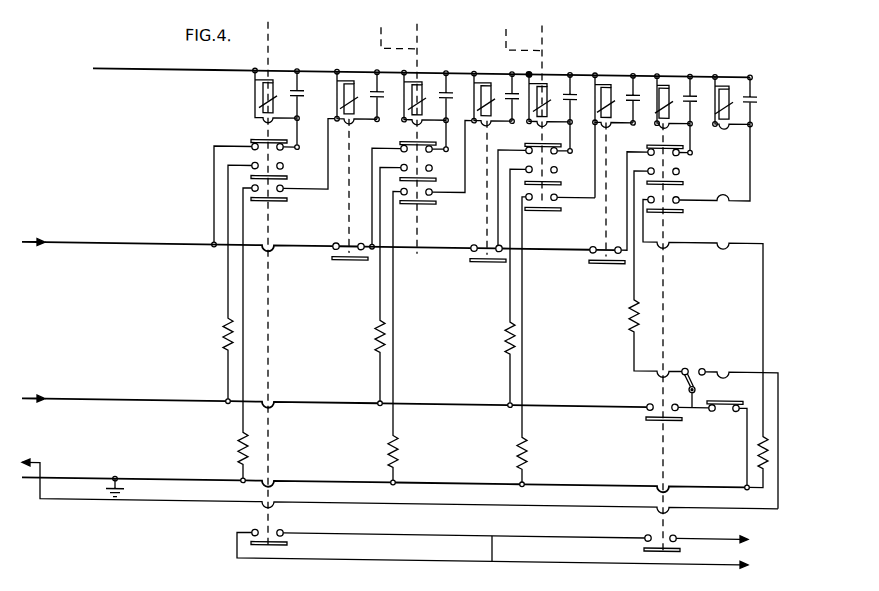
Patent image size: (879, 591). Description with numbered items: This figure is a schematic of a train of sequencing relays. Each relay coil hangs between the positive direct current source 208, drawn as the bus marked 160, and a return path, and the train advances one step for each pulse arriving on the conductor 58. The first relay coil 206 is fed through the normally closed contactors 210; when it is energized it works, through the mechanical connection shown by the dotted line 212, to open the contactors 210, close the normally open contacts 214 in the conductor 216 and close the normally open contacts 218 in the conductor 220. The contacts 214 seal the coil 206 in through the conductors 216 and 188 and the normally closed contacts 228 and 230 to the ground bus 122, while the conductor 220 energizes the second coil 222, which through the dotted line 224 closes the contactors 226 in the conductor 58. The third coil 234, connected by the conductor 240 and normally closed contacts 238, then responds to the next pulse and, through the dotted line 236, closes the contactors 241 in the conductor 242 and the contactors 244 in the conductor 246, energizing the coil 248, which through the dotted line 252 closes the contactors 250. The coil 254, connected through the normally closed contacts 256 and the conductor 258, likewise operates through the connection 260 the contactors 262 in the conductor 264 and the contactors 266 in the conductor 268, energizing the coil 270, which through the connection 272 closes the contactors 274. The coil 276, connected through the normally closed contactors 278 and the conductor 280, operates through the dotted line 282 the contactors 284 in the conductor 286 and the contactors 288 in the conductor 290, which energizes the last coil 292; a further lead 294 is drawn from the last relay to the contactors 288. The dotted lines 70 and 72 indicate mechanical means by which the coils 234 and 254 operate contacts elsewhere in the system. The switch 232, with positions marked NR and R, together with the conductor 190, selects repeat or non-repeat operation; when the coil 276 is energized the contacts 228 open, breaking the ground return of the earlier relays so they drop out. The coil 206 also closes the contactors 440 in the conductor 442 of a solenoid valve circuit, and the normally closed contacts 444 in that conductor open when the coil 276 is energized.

The conductor 58 is at (137, 240).
The dotted line (mechanical means) 70 is at (379, 31).
The dotted line (mechanical actuating means) 72 is at (505, 31).
The ground bus 122 is at (450, 476).
The source of positive voltage 160 is at (153, 58).
The conductor 188 is at (113, 396).
The conductor 190 is at (780, 360).
The coil of first relay 206 is at (258, 97).
The source of direct current positive voltage 208 is at (214, 67).
The normally closed contactors 210 is at (251, 138).
The dotted line (mechanical connection) 212 is at (270, 33).
The normally open contacts 214 is at (283, 164).
The conductor 216 is at (290, 153).
The normally open contacts 218 is at (283, 187).
The conductor 220 is at (243, 282).
The coil of second relay 222 is at (356, 82).
The dotted line (mechanical connection) 224 is at (348, 235).
The normally open contactors 226 is at (332, 253).
The normally closed contacts 228 is at (647, 404).
The normally closed contacts 230 is at (713, 444).
The switch 232 is at (688, 356).
The coil of third relay 234 is at (425, 84).
The dotted line (mechanical connection) 236 is at (419, 33).
The normally closed contacts 238 is at (400, 138).
The conductor 240 is at (372, 225).
The normally open contactors 241 is at (432, 164).
The conductor 242 is at (379, 287).
The normally open contactors 244 is at (432, 188).
The conductor 246 is at (394, 287).
The coil of relay 248 is at (494, 84).
The normally open contactors 250 is at (470, 253).
The dotted line (mechanical means) 252 is at (486, 224).
The coil of relay 254 is at (550, 84).
The normally closed contacts 256 is at (525, 136).
The conductor 258 is at (498, 223).
The mechanical connection 260 is at (544, 33).
The normally open contactors 262 is at (557, 165).
The conductor 264 is at (509, 287).
The normally open contactors 266 is at (557, 192).
The conductor 268 is at (523, 287).
The coil of relay 270 is at (613, 83).
The mechanical connection 272 is at (616, 228).
The normally open contactors 274 is at (589, 253).
The coil of relay 276 is at (670, 83).
The normally closed contactors 278 is at (680, 146).
The conductor 280 is at (647, 135).
The dotted line (mechanical connection) 282 is at (663, 262).
The normally open contactors 284 is at (679, 165).
The conductor 286 is at (680, 160).
The normally open contactors 288 is at (679, 193).
The conductor 290 is at (763, 270).
The coil of last relay 292 is at (731, 83).
The conductor 294 is at (735, 156).
The normally open contactors 440 is at (282, 526).
The conductor 442 is at (490, 527).
The normally closed contacts 444 is at (676, 527).